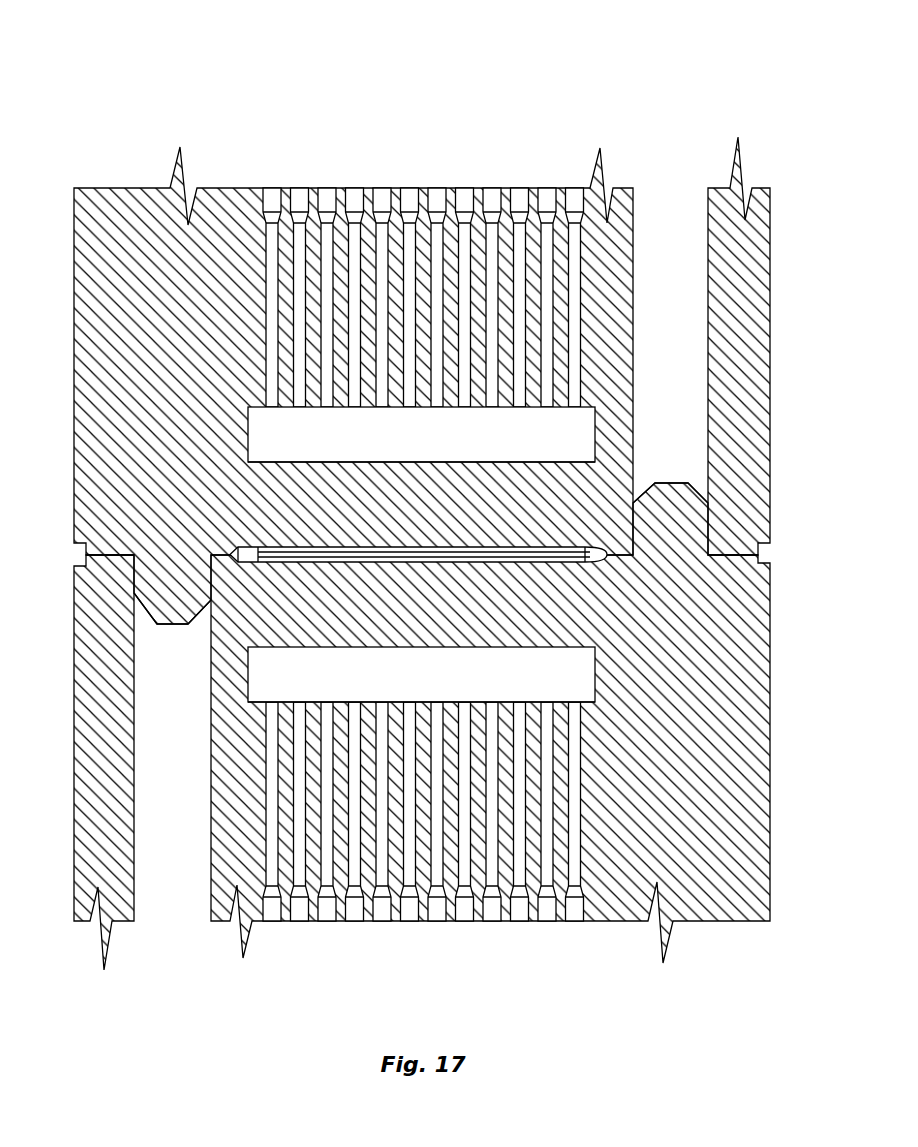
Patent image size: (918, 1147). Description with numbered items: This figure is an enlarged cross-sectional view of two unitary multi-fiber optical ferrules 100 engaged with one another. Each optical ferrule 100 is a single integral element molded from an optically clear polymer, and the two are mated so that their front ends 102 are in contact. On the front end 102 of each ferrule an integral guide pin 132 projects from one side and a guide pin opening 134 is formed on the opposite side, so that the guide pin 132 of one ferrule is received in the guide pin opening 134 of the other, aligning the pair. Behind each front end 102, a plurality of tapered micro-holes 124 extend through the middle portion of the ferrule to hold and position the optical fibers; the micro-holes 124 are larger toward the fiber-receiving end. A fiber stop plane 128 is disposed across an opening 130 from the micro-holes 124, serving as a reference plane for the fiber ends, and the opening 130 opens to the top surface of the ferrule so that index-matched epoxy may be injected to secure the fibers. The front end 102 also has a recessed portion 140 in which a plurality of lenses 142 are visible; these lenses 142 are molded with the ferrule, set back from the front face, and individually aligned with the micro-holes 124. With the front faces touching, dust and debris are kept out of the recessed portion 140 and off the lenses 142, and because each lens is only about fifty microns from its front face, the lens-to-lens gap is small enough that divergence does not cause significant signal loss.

The optical ferrule 100 is at (723, 88).
The front end 102 is at (77, 872).
The micro-holes 124 is at (470, 187).
The fiber stop plane 128 is at (285, 460).
The opening 130 is at (575, 442).
The integral guide pin 132 is at (697, 510).
The guide pin opening 134 is at (673, 212).
The recessed portion 140 is at (90, 554).
The lenses 142 is at (257, 546).